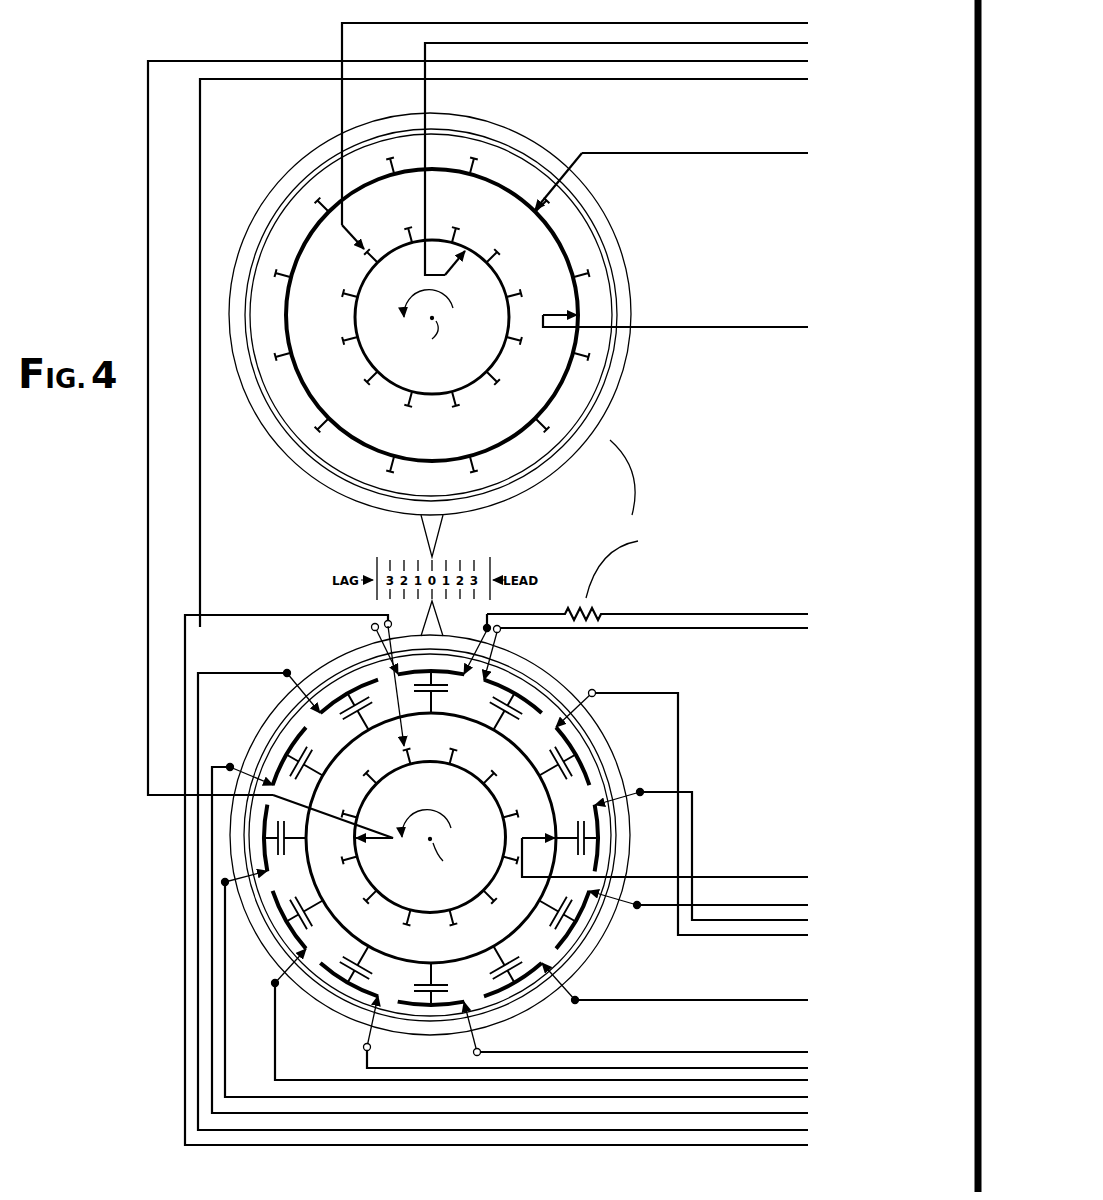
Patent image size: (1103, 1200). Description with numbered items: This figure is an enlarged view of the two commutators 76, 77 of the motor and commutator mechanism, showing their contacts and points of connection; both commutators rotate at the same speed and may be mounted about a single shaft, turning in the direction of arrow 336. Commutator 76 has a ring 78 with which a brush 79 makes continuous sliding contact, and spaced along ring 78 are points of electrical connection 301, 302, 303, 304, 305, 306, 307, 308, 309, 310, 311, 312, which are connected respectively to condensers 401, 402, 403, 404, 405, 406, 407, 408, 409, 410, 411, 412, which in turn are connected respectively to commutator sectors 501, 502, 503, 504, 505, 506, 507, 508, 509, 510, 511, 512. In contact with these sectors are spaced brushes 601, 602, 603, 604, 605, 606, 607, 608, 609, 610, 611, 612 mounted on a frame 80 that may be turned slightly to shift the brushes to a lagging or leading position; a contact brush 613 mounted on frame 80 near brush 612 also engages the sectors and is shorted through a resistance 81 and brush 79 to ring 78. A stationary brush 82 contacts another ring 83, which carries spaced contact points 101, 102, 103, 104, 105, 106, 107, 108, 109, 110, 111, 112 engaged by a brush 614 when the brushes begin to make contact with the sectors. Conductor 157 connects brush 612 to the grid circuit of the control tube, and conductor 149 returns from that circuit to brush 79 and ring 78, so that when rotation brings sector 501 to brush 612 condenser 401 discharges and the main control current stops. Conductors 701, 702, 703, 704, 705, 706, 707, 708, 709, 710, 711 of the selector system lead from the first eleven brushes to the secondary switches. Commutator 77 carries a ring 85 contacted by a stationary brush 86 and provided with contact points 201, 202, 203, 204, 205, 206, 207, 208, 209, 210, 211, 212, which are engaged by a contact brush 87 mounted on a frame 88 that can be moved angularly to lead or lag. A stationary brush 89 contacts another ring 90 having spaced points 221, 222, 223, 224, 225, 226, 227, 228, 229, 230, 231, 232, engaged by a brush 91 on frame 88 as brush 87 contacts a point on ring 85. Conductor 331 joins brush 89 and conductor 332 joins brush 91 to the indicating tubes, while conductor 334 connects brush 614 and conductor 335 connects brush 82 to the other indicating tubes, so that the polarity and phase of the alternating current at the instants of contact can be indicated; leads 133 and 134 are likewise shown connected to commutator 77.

The commutator 76 is at (632, 773).
The commutator 77 is at (618, 398).
The ring 78 is at (484, 774).
The brush 79 is at (507, 842).
The frame 80 is at (552, 676).
The resistance 81 is at (590, 612).
The stationary brush 82 is at (382, 840).
The ring 83 is at (388, 891).
The ring 85 is at (494, 189).
The stationary brush 86 is at (554, 314).
The contact brush 87 is at (572, 175).
The frame 88 is at (530, 144).
The stationary brush 89 is at (461, 277).
The ring 90 is at (492, 358).
The brush 91 is at (344, 242).
The lead 133 is at (806, 153).
The lead 134 is at (806, 327).
The conductor 149 is at (806, 877).
The conductor 157 is at (806, 628).
The conductor 331 is at (806, 43).
The conductor 332 is at (806, 23).
The conductor 334 is at (806, 79).
The conductor 335 is at (806, 61).
The arrow 336 is at (412, 320).
The contact point 101 is at (419, 751).
The contact point 102 is at (463, 756).
The contact point 103 is at (497, 778).
The contact point 104 is at (509, 807).
The contact point 105 is at (504, 870).
The contact point 106 is at (481, 903).
The contact point 107 is at (438, 919).
The contact point 108 is at (394, 918).
The contact point 109 is at (360, 892).
The contact point 110 is at (339, 853).
The contact point 111 is at (341, 808).
The contact point 112 is at (372, 770).
The contact point 201 is at (546, 211).
The contact point 202 is at (577, 281).
The contact point 203 is at (570, 365).
The contact point 204 is at (522, 433).
The contact point 205 is at (477, 467).
The contact point 206 is at (391, 470).
The contact point 207 is at (313, 432).
The contact point 208 is at (272, 366).
The contact point 209 is at (267, 285).
The contact point 210 is at (300, 212).
The contact point 211 is at (395, 159).
The contact point 212 is at (474, 165).
The contact point 221 is at (347, 262).
The contact point 222 is at (385, 231).
The contact point 223 is at (462, 230).
The contact point 224 is at (501, 259).
The contact point 225 is at (512, 304).
The contact point 226 is at (507, 347).
The contact point 227 is at (484, 388).
The contact point 228 is at (442, 412).
The contact point 229 is at (389, 412).
The contact point 230 is at (359, 389).
The contact point 231 is at (330, 350).
The contact point 232 is at (324, 301).
The point of electrical connection 301 is at (541, 775).
The point of electrical connection 302 is at (557, 825).
The point of electrical connection 303 is at (536, 907).
The point of electrical connection 304 is at (485, 956).
The point of electrical connection 305 is at (438, 972).
The point of electrical connection 306 is at (376, 957).
The point of electrical connection 307 is at (321, 908).
The point of electrical connection 308 is at (303, 836).
The point of electrical connection 309 is at (319, 771).
The point of electrical connection 310 is at (368, 718).
The point of electrical connection 311 is at (448, 699).
The point of electrical connection 312 is at (494, 720).
The condenser 401 is at (565, 772).
The condenser 402 is at (568, 846).
The condenser 403 is at (544, 918).
The condenser 404 is at (512, 958).
The condenser 405 is at (442, 977).
The condenser 406 is at (371, 968).
The condenser 407 is at (314, 918).
The condenser 408 is at (293, 846).
The condenser 409 is at (317, 756).
The condenser 410 is at (367, 708).
The condenser 411 is at (440, 697).
The condenser 412 is at (513, 718).
The commutator sector 501 is at (585, 770).
The commutator sector 502 is at (599, 857).
The commutator sector 503 is at (581, 919).
The commutator sector 504 is at (541, 966).
The commutator sector 505 is at (423, 1004).
The commutator sector 506 is at (336, 980).
The commutator sector 507 is at (306, 947).
The commutator sector 508 is at (265, 826).
The commutator sector 509 is at (282, 743).
The commutator sector 510 is at (326, 700).
The commutator sector 511 is at (448, 669).
The commutator sector 512 is at (542, 706).
The brush 601 is at (579, 716).
The brush 602 is at (619, 798).
The brush 603 is at (614, 902).
The brush 604 is at (559, 983).
The brush 605 is at (474, 1031).
The brush 606 is at (372, 1024).
The brush 607 is at (295, 960).
The brush 608 is at (248, 867).
The brush 609 is at (254, 774).
The brush 610 is at (303, 691).
The brush 611 is at (396, 642).
The brush 612 is at (492, 662).
The contact brush 613 is at (472, 642).
The brush 614 is at (400, 736).
The conductor 701 is at (806, 935).
The conductor 702 is at (806, 920).
The conductor 703 is at (806, 905).
The conductor 704 is at (806, 1000).
The conductor 705 is at (806, 1052).
The conductor 706 is at (806, 1068).
The conductor 707 is at (806, 1080).
The conductor 708 is at (806, 1097).
The conductor 709 is at (806, 1113).
The conductor 710 is at (806, 1130).
The conductor 711 is at (806, 1145).